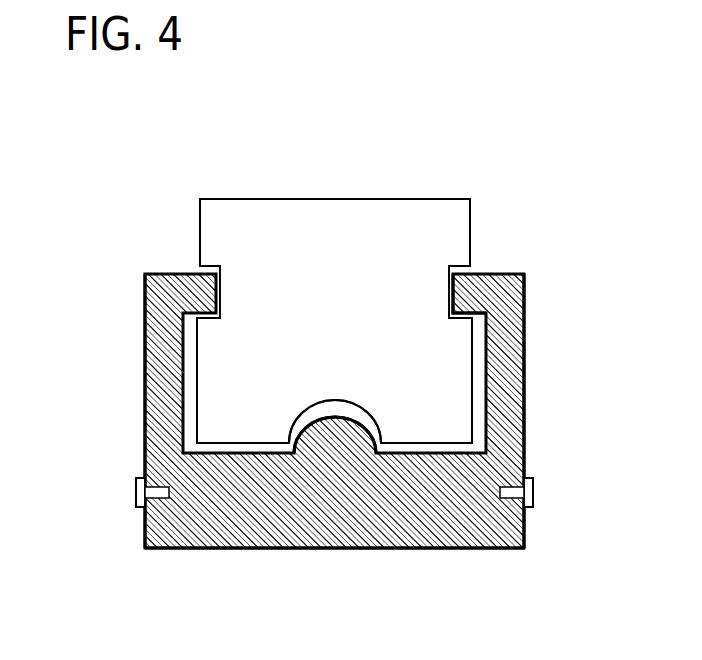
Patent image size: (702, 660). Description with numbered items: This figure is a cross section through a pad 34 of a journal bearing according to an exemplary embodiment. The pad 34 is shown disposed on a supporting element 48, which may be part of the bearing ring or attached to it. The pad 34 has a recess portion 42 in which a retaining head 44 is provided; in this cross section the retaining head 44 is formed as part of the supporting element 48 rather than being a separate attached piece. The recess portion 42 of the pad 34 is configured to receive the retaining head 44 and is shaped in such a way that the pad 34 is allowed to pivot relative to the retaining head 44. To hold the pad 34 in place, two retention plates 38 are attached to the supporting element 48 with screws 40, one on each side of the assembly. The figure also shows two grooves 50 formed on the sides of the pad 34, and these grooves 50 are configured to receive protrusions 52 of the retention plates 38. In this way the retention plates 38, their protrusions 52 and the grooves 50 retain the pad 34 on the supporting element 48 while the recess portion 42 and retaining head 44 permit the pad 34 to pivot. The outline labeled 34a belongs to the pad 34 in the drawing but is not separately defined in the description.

The pad 34 is at (370, 317).
The cover insert 34a is at (288, 198).
The retention plates 38 is at (158, 368).
The screws 40 is at (135, 492).
The recess portion 42 is at (312, 411).
The retaining head 44 is at (325, 435).
The supporting element 48 is at (457, 507).
The grooves 50 is at (463, 264).
The protrusions 52 is at (473, 295).